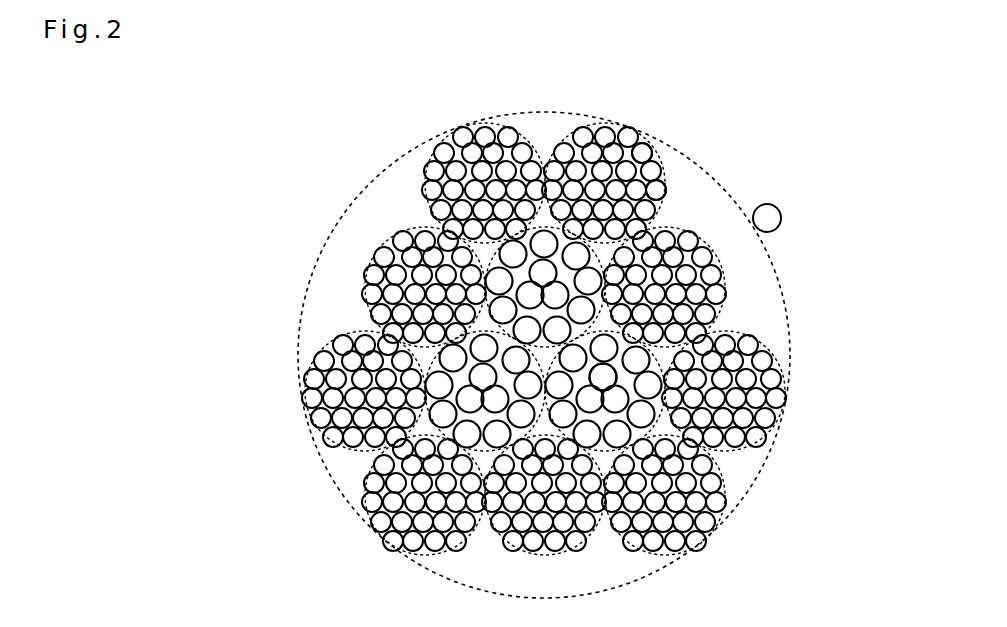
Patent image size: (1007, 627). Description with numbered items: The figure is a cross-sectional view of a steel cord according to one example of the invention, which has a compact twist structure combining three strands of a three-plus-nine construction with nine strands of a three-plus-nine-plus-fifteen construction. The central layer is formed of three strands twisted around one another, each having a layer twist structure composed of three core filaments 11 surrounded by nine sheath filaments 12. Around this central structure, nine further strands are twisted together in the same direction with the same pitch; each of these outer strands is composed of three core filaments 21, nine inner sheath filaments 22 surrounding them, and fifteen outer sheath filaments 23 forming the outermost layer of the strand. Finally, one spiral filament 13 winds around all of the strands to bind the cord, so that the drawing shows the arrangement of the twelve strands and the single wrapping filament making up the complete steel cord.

The core filament 11 is at (603, 377).
The sheath filament 12 is at (643, 416).
The spiral filament 13 is at (772, 214).
The core filament 21 is at (642, 153).
The inner sheath filament 22 is at (651, 171).
The outer sheath filament 23 is at (656, 190).